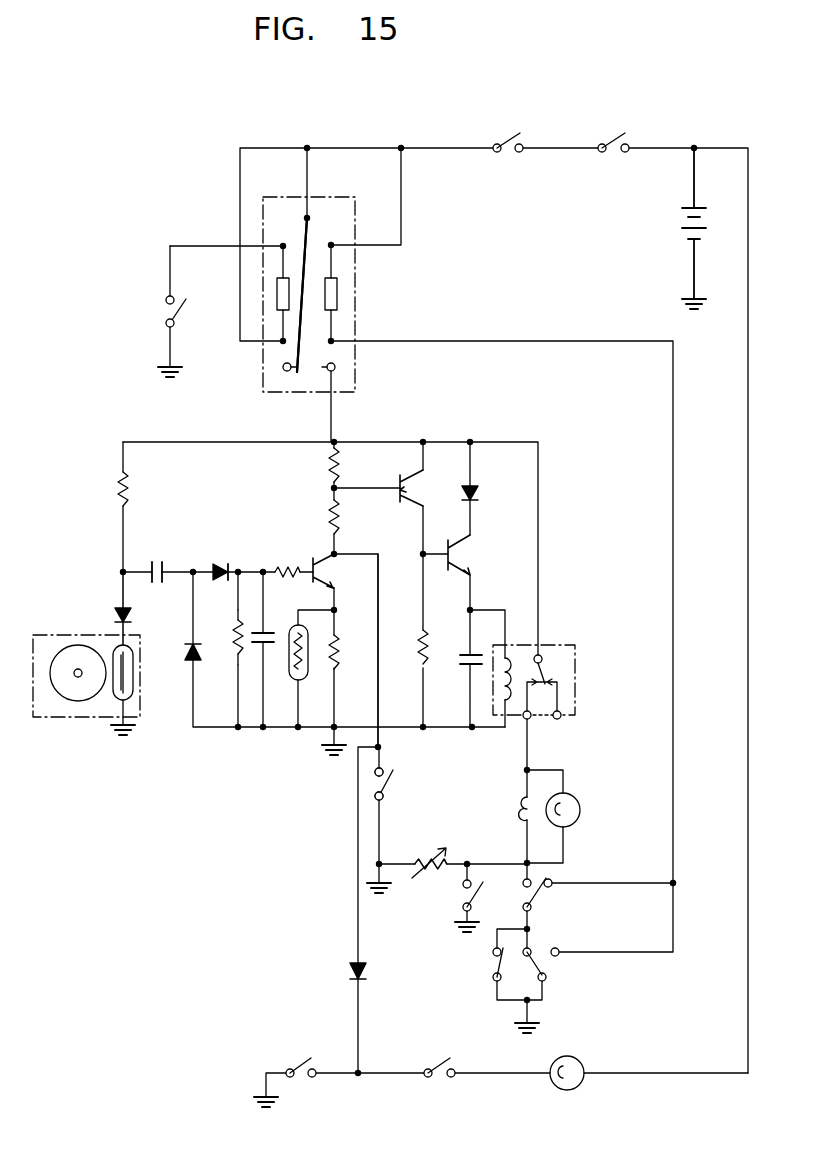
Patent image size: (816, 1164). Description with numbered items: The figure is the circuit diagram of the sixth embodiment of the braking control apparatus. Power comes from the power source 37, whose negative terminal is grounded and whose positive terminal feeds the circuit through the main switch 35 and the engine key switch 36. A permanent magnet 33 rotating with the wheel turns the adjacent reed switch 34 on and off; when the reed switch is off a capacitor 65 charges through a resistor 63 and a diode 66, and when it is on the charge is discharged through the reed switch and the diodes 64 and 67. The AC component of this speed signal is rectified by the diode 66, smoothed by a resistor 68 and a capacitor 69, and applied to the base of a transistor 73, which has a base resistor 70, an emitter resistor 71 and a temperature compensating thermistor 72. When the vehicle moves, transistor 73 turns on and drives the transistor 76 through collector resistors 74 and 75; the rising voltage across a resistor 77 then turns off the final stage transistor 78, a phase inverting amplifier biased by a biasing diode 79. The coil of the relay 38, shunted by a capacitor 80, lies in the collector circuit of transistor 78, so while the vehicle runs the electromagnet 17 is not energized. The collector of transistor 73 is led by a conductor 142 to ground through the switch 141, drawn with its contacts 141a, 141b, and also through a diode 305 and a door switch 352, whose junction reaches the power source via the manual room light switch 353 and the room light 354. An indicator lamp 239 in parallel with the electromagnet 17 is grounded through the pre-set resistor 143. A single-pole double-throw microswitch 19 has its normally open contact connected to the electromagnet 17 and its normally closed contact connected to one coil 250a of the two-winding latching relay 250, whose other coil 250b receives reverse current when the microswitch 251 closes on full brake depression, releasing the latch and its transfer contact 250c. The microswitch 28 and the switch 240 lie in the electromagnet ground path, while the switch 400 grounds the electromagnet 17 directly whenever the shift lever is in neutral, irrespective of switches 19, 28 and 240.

The electromagnet 17 is at (518, 810).
The microswitch 19 is at (540, 891).
The microswitch 28 is at (494, 971).
The permanent magnet 33 is at (78, 635).
The reed switch 34 is at (133, 694).
The main switch 35 is at (509, 133).
The key switch 36 is at (614, 133).
The power source 37 is at (680, 217).
The relay 38 is at (575, 666).
The resistor 63 is at (118, 486).
The diode 64 is at (134, 612).
The capacitor 65 is at (156, 560).
The diode 66 is at (221, 560).
The diode 67 is at (188, 656).
The resistor 68 is at (236, 656).
The capacitor 69 is at (270, 630).
The base resistor 70 is at (288, 566).
The emitter resistor 71 is at (339, 651).
The temperature compensating thermistor 72 is at (292, 676).
The transistor 73 is at (324, 575).
The collector resistor 74 is at (326, 466).
The collector resistor 75 is at (326, 506).
The transistor 76 is at (410, 490).
The resistor 77 is at (422, 656).
The final stage transistor 78 is at (462, 552).
The biasing diode 79 is at (482, 493).
The capacitor 80 is at (462, 657).
The switch 141 is at (392, 776).
The switch contact 141a is at (375, 770).
The switch contact 141b is at (388, 775).
The conductor 142 is at (380, 722).
The pre-set resistor 143 is at (433, 858).
The indicator lamp 239 is at (582, 808).
The switch 240 is at (540, 965).
The latching relay 250 is at (355, 276).
The coil 250a is at (337, 294).
The coil 250b is at (277, 292).
The transfer contact 250c is at (296, 353).
The microswitch 251 is at (165, 312).
The diode 305 is at (368, 972).
The door switch 352 is at (302, 1063).
The manual room light switch 353 is at (435, 1063).
The room light 354 is at (558, 1060).
The switch 400 is at (462, 894).